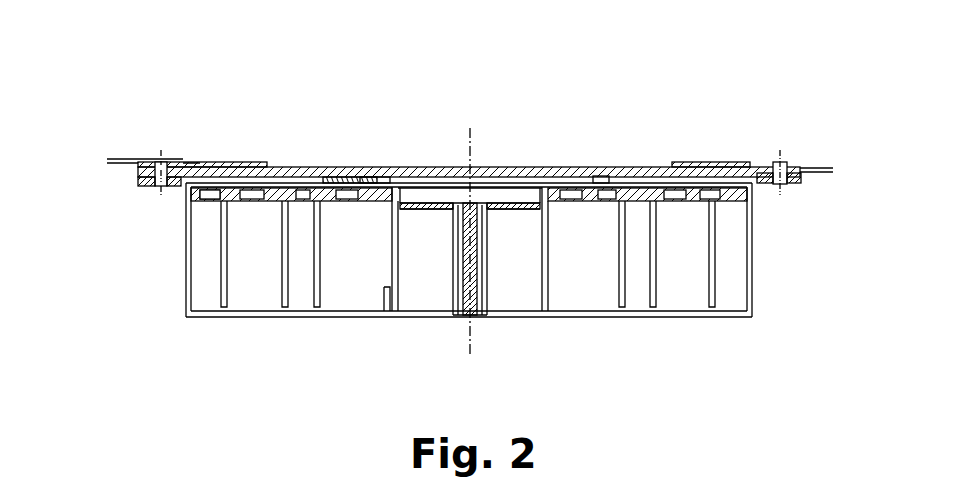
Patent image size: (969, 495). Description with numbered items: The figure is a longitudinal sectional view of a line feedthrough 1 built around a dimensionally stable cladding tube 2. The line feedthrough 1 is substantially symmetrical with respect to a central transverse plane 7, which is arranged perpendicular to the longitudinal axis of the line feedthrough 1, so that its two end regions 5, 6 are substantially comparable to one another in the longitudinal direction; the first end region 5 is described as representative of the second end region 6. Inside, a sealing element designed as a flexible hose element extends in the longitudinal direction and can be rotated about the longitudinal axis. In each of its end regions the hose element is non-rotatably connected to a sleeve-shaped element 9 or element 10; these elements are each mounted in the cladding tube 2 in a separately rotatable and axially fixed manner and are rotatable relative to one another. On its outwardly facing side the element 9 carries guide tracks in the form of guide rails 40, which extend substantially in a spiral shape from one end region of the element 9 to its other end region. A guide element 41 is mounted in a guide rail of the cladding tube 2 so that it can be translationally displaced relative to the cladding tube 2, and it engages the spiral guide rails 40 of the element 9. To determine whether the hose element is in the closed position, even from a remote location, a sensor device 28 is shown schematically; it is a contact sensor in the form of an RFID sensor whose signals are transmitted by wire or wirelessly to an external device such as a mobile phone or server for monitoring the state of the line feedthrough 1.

The line feedthrough 1 is at (169, 126).
The cladding tube 2 is at (555, 165).
The first end region 5 is at (178, 243).
The second end region 6 is at (775, 246).
The central transverse plane 7 is at (471, 145).
The element 9 is at (265, 188).
The element 10 is at (652, 188).
The sensor device 28 is at (370, 178).
The guide rail 40 is at (232, 190).
The guide element 41 is at (328, 180).